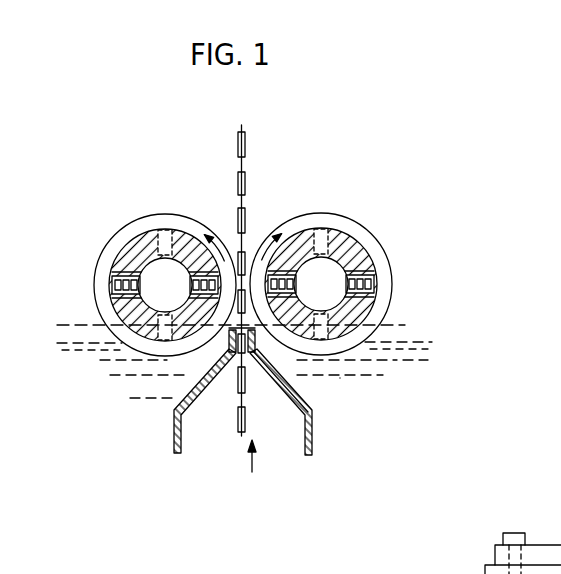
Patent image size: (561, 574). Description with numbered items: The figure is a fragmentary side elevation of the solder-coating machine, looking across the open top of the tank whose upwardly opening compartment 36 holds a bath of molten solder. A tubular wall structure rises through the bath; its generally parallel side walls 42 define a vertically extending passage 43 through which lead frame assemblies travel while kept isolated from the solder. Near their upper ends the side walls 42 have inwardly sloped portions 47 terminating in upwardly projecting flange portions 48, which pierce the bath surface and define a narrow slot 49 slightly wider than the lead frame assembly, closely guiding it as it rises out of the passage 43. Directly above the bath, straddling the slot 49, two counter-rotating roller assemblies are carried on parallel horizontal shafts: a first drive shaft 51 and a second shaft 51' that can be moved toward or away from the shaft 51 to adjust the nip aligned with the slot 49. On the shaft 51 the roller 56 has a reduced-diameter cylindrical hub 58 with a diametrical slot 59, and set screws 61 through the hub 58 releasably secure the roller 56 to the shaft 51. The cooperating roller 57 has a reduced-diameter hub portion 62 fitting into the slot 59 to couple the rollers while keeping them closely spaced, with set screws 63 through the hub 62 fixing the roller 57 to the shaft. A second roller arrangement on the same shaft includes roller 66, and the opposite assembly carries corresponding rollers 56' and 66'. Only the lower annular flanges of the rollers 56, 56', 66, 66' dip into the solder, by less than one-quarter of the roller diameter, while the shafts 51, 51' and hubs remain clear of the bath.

The roller 56 is at (145, 250).
The roller 66 is at (165, 260).
The roller 56' is at (344, 255).
The roller 66' is at (321, 265).
The set screws 61 is at (159, 259).
The set screws 63 is at (338, 268).
The cylindrical hub 58 is at (183, 250).
The slot 59 is at (138, 247).
The hub portion 62 is at (118, 299).
The first drive shaft 51 is at (136, 319).
The rotatable shaft 51' is at (376, 319).
The roller 57 is at (80, 342).
The compartment 36 is at (406, 357).
The narrow slot 49 is at (236, 366).
The flange portions 48 is at (226, 352).
The side walls 42 is at (176, 436).
The inwardly sloped portions 47 is at (297, 388).
The passage 43 is at (203, 440).